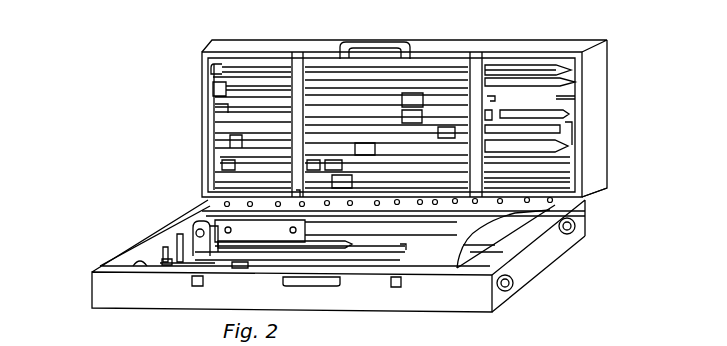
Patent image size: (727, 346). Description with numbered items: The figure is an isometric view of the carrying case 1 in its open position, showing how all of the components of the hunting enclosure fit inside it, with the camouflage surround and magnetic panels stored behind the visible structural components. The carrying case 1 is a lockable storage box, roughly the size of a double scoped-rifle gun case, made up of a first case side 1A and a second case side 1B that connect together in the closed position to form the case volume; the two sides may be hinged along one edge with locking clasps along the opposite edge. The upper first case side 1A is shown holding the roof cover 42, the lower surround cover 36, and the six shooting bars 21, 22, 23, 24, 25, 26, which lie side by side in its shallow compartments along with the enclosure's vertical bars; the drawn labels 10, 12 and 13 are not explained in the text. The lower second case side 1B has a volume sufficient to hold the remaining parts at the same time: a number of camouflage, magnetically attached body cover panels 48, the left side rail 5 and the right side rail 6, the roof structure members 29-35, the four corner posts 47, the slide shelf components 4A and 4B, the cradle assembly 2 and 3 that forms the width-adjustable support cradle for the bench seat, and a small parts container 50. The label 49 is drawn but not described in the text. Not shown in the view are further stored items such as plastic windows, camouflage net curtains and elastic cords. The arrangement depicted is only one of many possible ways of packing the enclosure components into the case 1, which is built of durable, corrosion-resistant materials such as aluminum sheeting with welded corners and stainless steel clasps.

The carrying case 1 is at (115, 152).
The first case side 1A is at (531, 45).
The second case side 1B is at (463, 296).
The cradle assembly 2 is at (573, 210).
The cradle assembly 3 is at (97, 270).
The slide shelf component 4A is at (262, 233).
The slide shelf component 4B is at (205, 207).
The left side rail 5 is at (517, 273).
The right side rail 6 is at (583, 203).
The tool 10 is at (215, 142).
The tool 12 is at (216, 161).
The tool 13 is at (583, 179).
The shooting bar 21 is at (212, 71).
The shooting bar 22 is at (212, 89).
The shooting bar 23 is at (583, 66).
The shooting bar 24 is at (583, 117).
The shooting bar 25 is at (583, 84).
The shooting bar 26 is at (583, 141).
The roof structure members 29-35 is at (163, 249).
The lower surround cover 36 is at (556, 97).
The roof cover 42 is at (538, 97).
The corner posts 47 is at (167, 262).
The body cover panels 48 is at (520, 250).
The clip 49 is at (408, 251).
The small parts container 50 is at (560, 228).